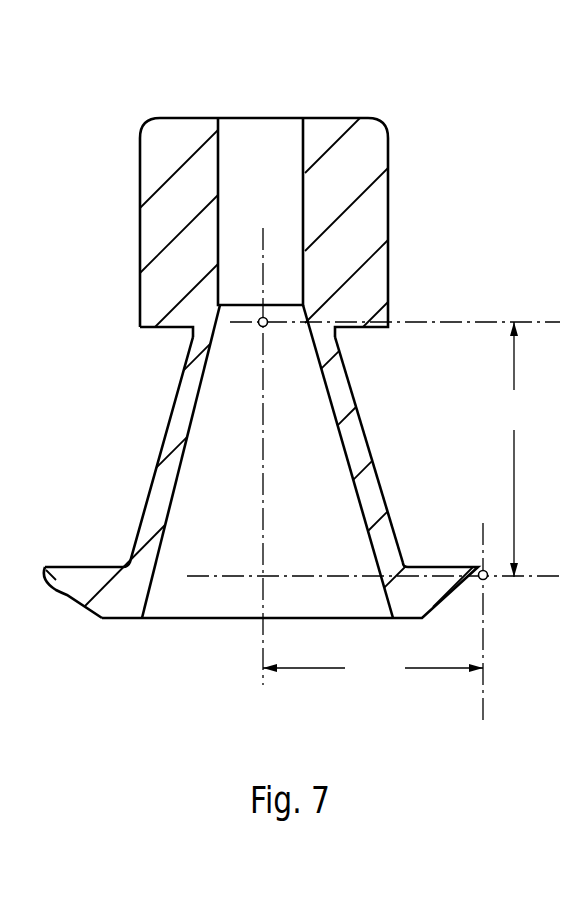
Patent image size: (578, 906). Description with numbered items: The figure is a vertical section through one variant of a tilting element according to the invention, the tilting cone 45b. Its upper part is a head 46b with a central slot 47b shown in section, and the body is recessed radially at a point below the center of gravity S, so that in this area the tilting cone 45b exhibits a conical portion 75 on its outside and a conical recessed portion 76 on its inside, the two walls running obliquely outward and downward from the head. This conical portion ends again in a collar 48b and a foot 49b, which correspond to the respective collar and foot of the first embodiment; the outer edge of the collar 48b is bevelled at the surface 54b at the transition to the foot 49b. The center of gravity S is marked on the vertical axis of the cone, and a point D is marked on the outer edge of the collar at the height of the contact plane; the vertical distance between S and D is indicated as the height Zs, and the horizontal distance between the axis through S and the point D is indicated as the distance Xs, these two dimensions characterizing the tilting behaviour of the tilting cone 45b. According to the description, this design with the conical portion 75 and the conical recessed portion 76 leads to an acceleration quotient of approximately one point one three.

The tilting cone 45b is at (307, 377).
The head 46b is at (373, 224).
The slot 47b is at (290, 161).
The collar 48b is at (90, 583).
The foot 49b is at (122, 600).
The bevelled edge 54b is at (70, 604).
The conical portion 75 is at (365, 430).
The conical recessed portion 76 is at (332, 434).
The center of gravity S is at (268, 326).
The point D is at (488, 579).
The height dimension Zs is at (516, 449).
The width dimension Xs is at (373, 673).